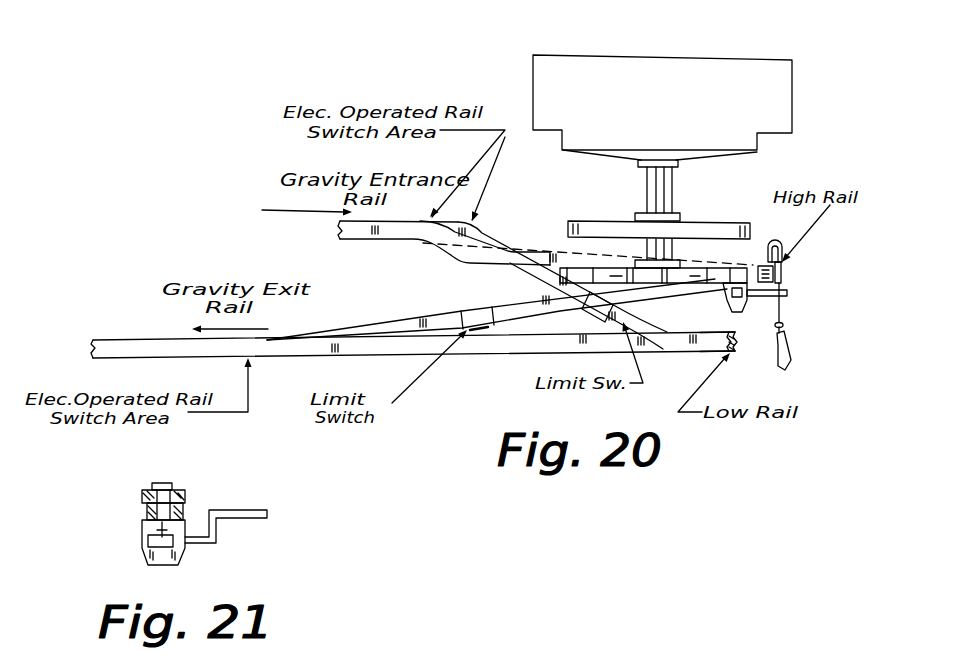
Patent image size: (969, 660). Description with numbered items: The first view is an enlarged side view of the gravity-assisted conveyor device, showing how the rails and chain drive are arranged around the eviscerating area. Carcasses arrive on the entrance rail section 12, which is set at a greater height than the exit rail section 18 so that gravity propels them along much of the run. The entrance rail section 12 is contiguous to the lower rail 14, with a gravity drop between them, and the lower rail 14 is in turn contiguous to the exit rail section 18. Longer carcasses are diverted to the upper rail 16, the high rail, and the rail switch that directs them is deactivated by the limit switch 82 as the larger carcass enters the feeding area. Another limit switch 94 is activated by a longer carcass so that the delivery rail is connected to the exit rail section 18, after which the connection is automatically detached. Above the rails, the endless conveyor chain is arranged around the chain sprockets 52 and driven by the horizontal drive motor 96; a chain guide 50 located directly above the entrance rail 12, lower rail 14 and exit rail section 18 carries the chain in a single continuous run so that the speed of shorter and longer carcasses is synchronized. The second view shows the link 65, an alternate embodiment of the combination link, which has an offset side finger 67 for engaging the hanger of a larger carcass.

In FIG. 20, the horizontal drive motor 96 is at (763, 78).
In FIG. 20, the entrance rail section 12 is at (340, 232).
In FIG. 20, the exit rail section 18 is at (152, 348).
In FIG. 20, the limit switch 94 is at (472, 311).
In FIG. 20, the limit switch 82 is at (593, 319).
In FIG. 20, the chain sprockets 52 is at (685, 280).
In FIG. 20, the upper rail 16 is at (787, 293).
In FIG. 20, the lower rail 14 is at (738, 345).
In FIG. 21, the chain guide 50 is at (142, 498).
In FIG. 21, the link 65 is at (142, 527).
In FIG. 21, the offset side finger 67 is at (260, 510).